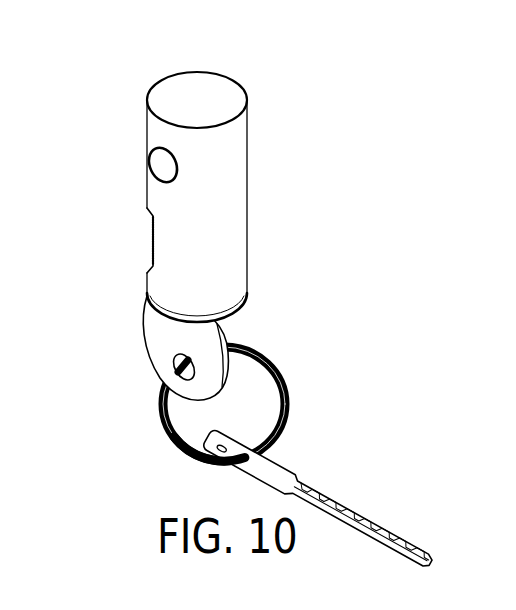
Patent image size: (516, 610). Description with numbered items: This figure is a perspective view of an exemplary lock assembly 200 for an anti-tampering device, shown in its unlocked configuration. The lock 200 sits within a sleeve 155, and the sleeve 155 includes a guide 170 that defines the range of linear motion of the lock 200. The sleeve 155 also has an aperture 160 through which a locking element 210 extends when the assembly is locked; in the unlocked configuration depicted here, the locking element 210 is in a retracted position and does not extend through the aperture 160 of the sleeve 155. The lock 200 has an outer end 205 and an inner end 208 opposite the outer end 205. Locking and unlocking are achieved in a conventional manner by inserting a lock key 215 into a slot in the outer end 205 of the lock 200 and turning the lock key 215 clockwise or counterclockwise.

The lock 200 is at (230, 248).
The inner end 208 is at (192, 103).
The aperture 160 is at (178, 172).
The locking element 210 is at (165, 170).
The sleeve 155 is at (247, 245).
The guide 170 is at (148, 242).
The outer end 205 is at (232, 320).
The lock key 215 is at (230, 340).